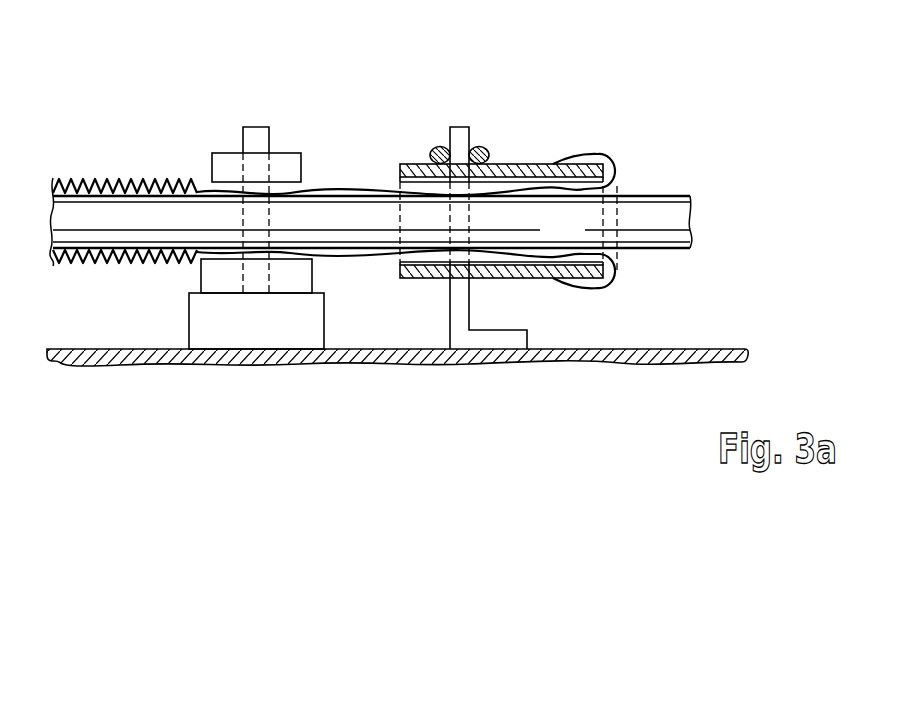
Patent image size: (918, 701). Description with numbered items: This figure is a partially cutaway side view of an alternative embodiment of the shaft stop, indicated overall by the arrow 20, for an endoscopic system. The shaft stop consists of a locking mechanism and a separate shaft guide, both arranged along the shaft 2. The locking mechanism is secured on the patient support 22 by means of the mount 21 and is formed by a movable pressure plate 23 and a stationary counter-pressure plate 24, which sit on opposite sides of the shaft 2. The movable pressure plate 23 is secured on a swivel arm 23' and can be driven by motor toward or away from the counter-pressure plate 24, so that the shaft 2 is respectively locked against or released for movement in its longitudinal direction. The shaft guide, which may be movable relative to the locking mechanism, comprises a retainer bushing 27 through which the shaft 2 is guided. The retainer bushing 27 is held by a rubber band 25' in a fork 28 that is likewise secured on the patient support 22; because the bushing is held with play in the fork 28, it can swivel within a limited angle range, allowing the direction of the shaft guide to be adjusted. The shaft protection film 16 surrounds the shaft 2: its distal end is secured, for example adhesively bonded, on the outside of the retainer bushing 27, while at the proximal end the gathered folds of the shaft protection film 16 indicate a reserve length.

The shaft 2 is at (668, 210).
The shaft protection film 16 is at (116, 180).
The bearing arrangement 20 is at (663, 58).
The mount 21 is at (258, 330).
The patient support 22 is at (145, 355).
The movable pressure plate 23 is at (285, 168).
The swivel arm 23' is at (257, 177).
The stationary counter-pressure plate 24 is at (215, 276).
The rubber band 25' is at (462, 174).
The retainer bushing 27 is at (537, 165).
The fork 28 is at (458, 308).